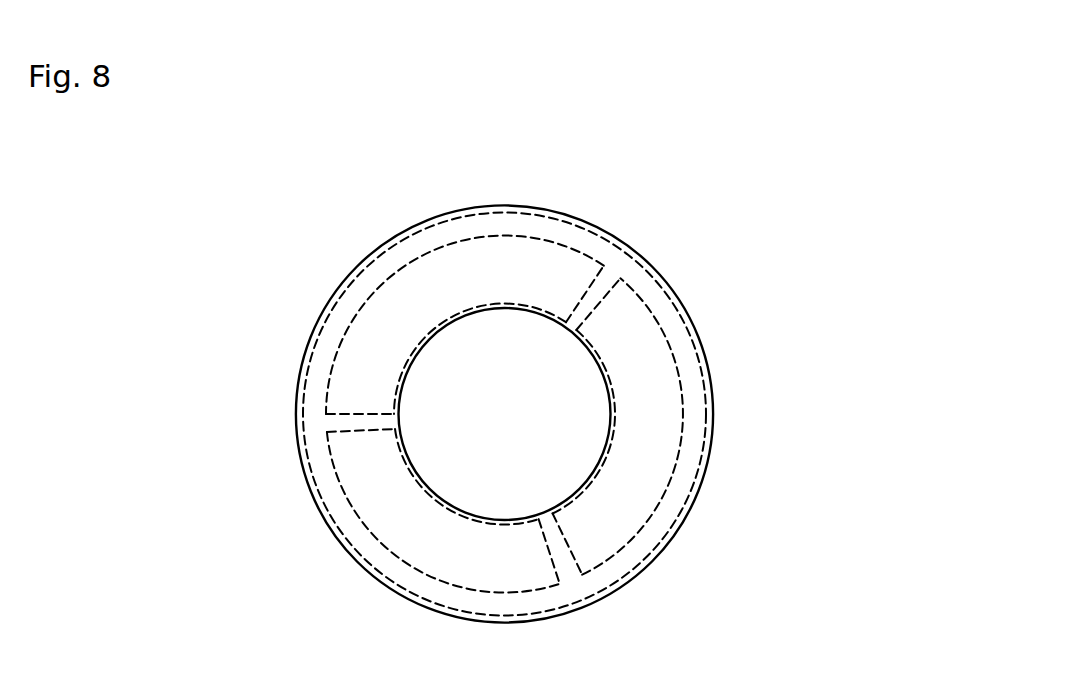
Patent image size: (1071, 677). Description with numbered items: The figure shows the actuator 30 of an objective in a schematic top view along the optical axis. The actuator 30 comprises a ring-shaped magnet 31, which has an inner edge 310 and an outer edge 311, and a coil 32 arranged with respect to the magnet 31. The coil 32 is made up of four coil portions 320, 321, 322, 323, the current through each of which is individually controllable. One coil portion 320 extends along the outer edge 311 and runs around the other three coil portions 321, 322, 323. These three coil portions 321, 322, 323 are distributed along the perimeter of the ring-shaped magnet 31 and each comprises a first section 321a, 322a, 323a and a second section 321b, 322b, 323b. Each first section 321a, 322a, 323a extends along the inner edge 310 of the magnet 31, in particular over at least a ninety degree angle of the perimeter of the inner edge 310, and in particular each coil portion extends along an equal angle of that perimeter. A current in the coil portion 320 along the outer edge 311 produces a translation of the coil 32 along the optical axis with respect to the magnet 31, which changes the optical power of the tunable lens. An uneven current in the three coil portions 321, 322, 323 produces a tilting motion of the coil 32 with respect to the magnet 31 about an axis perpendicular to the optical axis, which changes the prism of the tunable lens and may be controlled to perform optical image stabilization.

The actuator 30 is at (166, 346).
The magnet 31 is at (305, 340).
The inner edge 310 is at (594, 457).
The outer edge 311 is at (323, 295).
The coil 32 is at (300, 408).
The coil portion 320 is at (377, 250).
The coil portion 321 is at (418, 160).
The first section 321a is at (507, 304).
The second section 321b is at (458, 239).
The coil portion 322 is at (727, 327).
The first section 322a is at (612, 452).
The second section 322b is at (686, 403).
The coil portion 323 is at (257, 548).
The first section 323a is at (430, 499).
The second section 323b is at (342, 490).